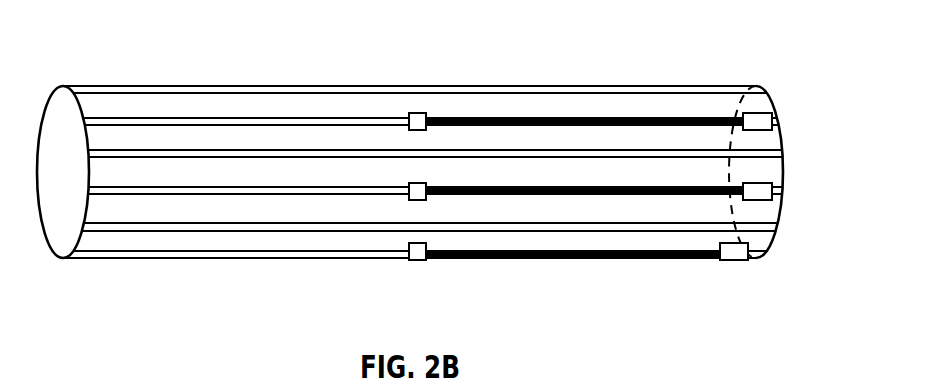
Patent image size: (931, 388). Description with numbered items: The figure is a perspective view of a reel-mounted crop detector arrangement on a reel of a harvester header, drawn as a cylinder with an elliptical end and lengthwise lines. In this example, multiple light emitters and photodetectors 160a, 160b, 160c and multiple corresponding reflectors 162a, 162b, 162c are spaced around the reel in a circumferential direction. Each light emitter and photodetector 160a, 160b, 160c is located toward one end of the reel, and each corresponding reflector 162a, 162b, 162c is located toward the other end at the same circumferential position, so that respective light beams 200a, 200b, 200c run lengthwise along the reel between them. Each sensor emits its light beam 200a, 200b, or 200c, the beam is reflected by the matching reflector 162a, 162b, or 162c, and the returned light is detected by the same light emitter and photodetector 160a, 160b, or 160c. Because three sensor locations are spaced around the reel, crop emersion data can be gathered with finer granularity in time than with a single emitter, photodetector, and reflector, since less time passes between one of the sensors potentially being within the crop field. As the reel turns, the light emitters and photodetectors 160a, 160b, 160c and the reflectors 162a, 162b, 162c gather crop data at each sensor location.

The light emitter and photodetector 160a is at (758, 113).
The light emitter and photodetector 160b is at (754, 183).
The light emitter and photodetector 160c is at (738, 261).
The reflector 162a is at (417, 113).
The reflector 162b is at (418, 183).
The reflector 162c is at (420, 261).
The light beam 200a is at (452, 119).
The light beam 200b is at (518, 188).
The light beam 200c is at (604, 252).